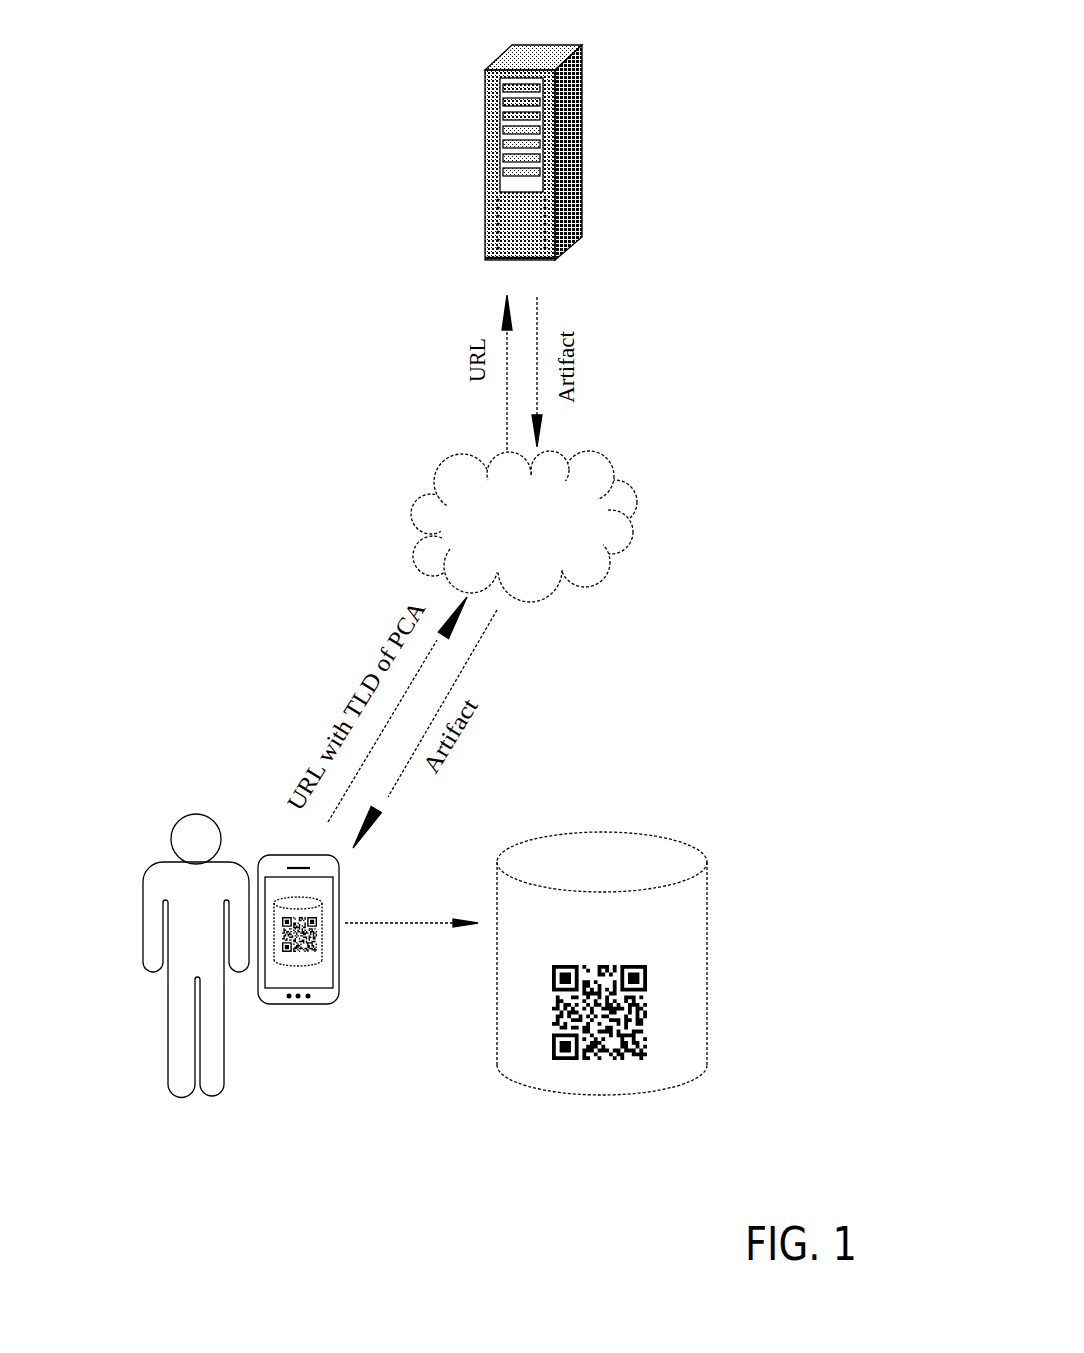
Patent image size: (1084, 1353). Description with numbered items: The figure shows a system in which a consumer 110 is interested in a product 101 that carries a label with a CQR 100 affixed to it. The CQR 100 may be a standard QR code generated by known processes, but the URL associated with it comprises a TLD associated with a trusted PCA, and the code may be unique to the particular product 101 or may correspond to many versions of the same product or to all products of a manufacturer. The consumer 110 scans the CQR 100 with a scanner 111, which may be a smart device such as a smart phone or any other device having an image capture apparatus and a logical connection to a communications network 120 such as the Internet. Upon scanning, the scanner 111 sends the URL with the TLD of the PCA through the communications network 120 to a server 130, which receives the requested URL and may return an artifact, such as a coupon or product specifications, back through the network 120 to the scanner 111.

The CQR 100 is at (607, 1062).
The product 101 is at (728, 904).
The consumer 110 is at (205, 1102).
The scanner 111 is at (306, 1004).
The communications network 120 is at (648, 515).
The server 130 is at (593, 194).